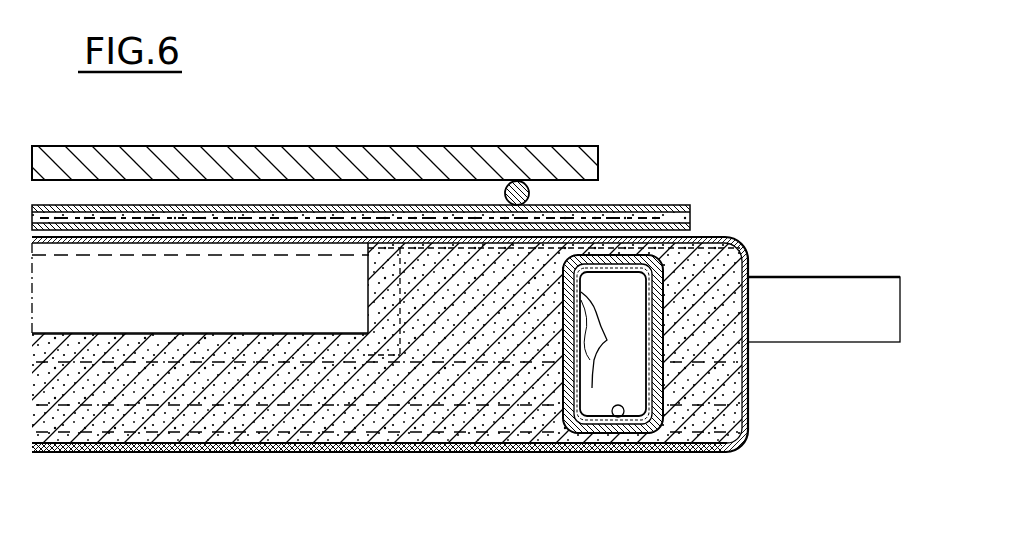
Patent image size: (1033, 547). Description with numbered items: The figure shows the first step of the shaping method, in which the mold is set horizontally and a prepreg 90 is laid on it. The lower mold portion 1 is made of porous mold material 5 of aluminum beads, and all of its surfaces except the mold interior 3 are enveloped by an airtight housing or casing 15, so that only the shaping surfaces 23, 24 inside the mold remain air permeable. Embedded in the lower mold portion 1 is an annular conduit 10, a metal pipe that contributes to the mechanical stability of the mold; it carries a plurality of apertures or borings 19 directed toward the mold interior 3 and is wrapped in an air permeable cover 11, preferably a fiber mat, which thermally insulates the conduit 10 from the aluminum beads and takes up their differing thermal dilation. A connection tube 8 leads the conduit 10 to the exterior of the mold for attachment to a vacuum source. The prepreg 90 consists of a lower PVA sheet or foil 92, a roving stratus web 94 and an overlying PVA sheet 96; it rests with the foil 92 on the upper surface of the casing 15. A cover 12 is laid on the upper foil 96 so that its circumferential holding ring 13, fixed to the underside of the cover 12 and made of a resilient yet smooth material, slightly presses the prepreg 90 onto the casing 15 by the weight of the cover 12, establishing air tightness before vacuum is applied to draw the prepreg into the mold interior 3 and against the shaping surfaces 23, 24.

The lower mold portion 1 is at (766, 391).
The mold interior 3 is at (136, 307).
The porous mold material 5 is at (153, 390).
The connection tube 8 is at (855, 290).
The conduit 10 is at (628, 433).
The air permeable cover 11 is at (590, 430).
The cover 12 is at (227, 157).
The circumferential holding ring 13 is at (521, 181).
The airtight housing or casing 15 is at (217, 451).
The apertures or borings 19 is at (607, 354).
The shaping surface 23 is at (187, 333).
The shaping surface 24 is at (368, 283).
The prepreg 90 is at (410, 193).
The PVA sheet or foil 92 is at (692, 230).
The roving stratus web 94 is at (692, 217).
The overlying PVA sheet 96 is at (672, 205).